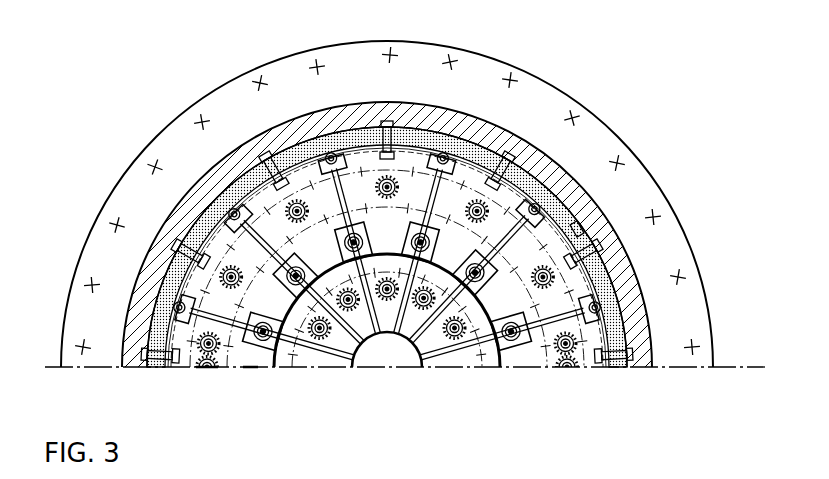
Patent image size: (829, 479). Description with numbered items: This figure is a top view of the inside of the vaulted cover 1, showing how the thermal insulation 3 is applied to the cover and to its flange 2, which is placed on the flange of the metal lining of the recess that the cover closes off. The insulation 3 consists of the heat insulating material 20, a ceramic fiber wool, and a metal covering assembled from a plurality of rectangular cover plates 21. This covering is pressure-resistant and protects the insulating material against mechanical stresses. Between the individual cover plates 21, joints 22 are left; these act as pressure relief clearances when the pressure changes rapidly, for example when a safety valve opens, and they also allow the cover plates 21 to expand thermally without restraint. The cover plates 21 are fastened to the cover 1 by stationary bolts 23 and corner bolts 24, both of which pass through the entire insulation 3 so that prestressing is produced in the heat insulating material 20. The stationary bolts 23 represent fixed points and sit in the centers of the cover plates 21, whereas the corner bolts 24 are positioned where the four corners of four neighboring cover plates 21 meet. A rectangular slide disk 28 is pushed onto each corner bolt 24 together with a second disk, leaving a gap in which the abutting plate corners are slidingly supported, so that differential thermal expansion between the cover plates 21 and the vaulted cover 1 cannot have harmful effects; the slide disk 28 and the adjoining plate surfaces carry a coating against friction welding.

The vaulted cover 1 is at (563, 183).
The flange 2 is at (598, 147).
The thermal insulation 3 is at (603, 332).
The heat insulating material 20 is at (452, 142).
The cover plates 21 is at (592, 230).
The joints 22 is at (436, 356).
The stationary bolts 23 is at (268, 160).
The corner bolts 24 is at (330, 336).
The slide disk 28 is at (250, 367).